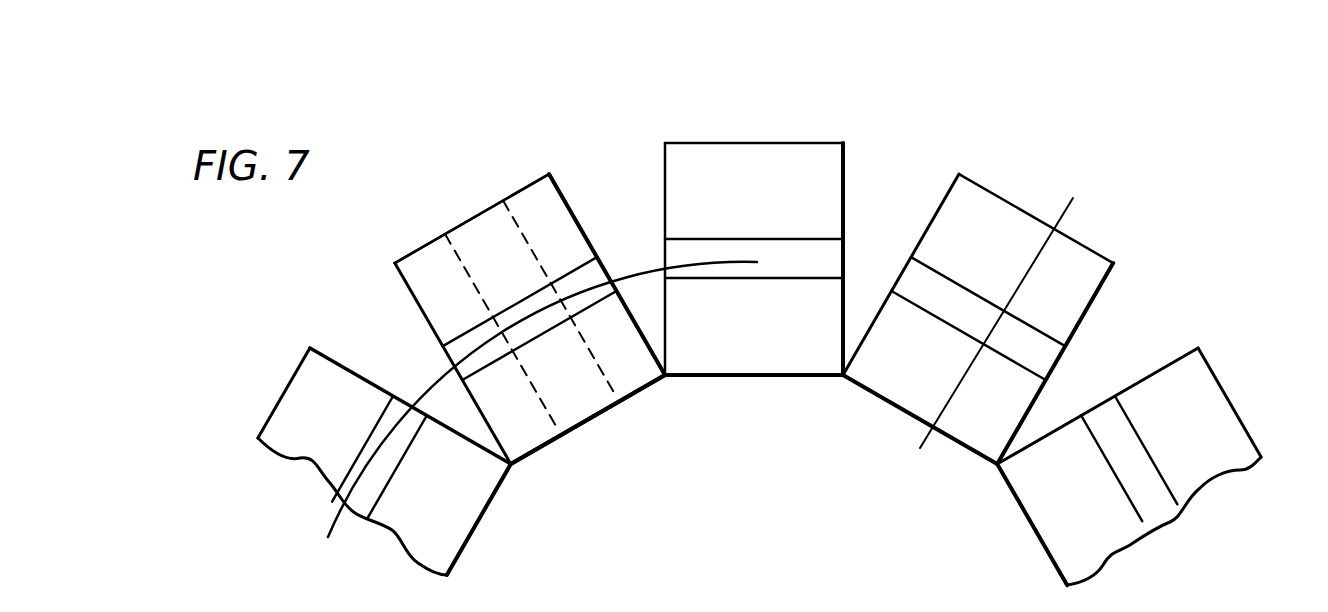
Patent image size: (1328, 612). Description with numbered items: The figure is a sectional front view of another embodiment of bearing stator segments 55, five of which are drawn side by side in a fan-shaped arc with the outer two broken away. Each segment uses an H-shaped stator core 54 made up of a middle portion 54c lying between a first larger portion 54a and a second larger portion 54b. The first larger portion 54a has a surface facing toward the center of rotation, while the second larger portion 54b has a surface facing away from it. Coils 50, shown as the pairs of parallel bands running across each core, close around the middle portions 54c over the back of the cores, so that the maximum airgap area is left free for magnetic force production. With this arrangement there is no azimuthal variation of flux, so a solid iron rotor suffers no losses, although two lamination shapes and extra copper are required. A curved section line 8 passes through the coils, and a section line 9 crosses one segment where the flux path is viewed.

The bearing stator segments 55 is at (771, 315).
The H-shaped stator core 54 is at (426, 300).
The coils 50 is at (458, 350).
The first larger portion 54a is at (609, 410).
The second larger portion 54b is at (482, 222).
The middle portion 54c is at (564, 314).
The line 8— 8 is at (757, 262).
The line 9— 9 is at (1073, 198).